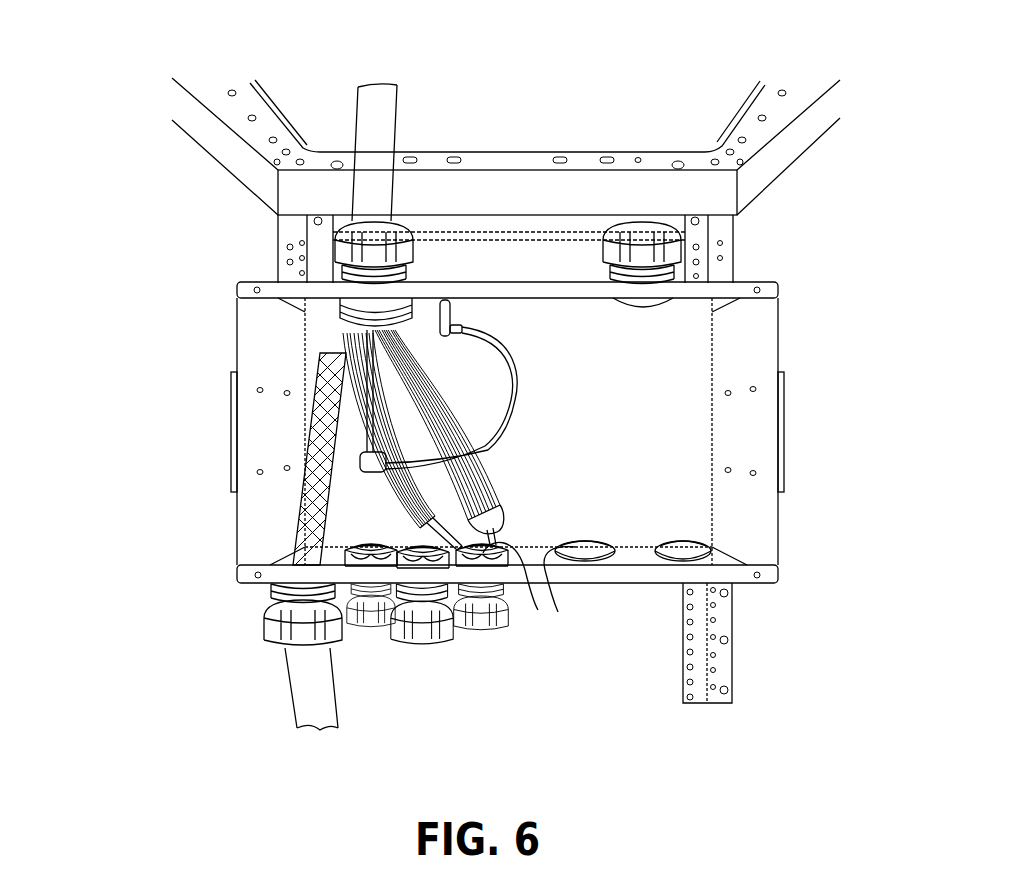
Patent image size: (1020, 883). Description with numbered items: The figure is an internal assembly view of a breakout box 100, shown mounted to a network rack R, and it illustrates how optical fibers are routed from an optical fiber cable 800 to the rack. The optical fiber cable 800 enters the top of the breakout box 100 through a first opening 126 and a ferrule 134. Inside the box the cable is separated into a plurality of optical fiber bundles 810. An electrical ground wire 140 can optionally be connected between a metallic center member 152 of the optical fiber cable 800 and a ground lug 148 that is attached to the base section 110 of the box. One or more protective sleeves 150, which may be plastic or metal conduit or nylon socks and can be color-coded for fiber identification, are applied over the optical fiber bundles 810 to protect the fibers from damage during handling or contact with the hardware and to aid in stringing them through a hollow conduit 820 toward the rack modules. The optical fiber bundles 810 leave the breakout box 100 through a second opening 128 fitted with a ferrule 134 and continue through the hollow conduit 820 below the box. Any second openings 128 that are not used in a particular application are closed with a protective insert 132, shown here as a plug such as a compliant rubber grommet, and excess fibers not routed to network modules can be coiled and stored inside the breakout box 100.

The breakout box 100 is at (140, 268).
The base section 110 is at (784, 345).
The first opening 126 is at (345, 353).
The second opening 128 is at (529, 589).
The protective insert 132 is at (585, 548).
The ferrule 134 is at (350, 252).
The electrical ground wire 140 is at (510, 345).
The ground lug 148 is at (438, 305).
The protective sleeve 150 is at (318, 525).
The center member 152 is at (375, 392).
The optical fiber cable 800 is at (372, 92).
The optical fiber bundles 810 is at (490, 470).
The hollow conduit 820 is at (300, 694).
The network rack R is at (722, 675).